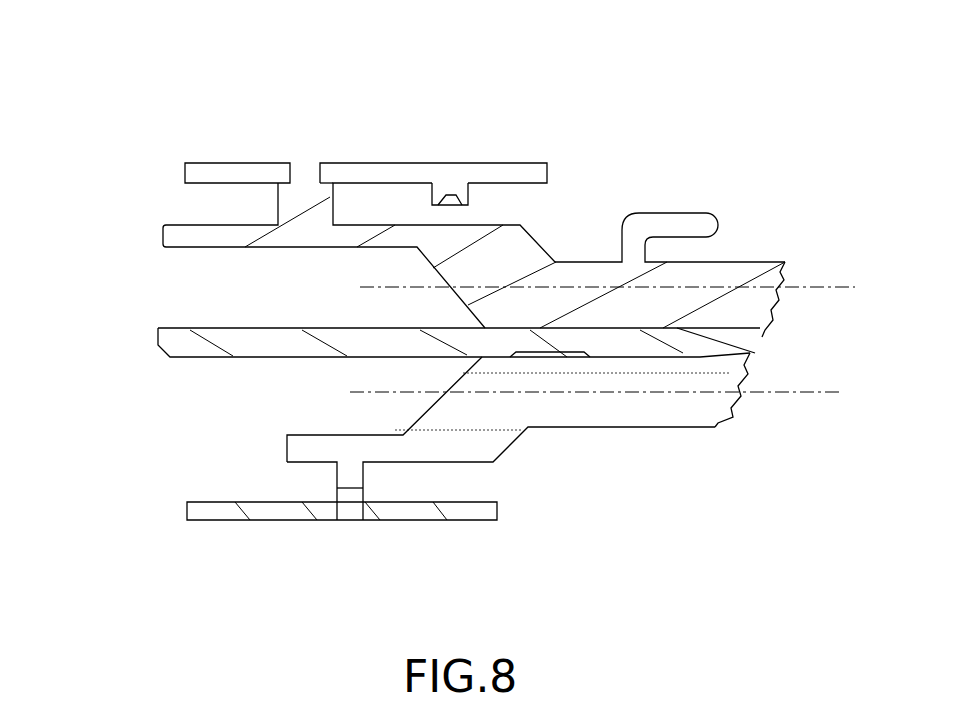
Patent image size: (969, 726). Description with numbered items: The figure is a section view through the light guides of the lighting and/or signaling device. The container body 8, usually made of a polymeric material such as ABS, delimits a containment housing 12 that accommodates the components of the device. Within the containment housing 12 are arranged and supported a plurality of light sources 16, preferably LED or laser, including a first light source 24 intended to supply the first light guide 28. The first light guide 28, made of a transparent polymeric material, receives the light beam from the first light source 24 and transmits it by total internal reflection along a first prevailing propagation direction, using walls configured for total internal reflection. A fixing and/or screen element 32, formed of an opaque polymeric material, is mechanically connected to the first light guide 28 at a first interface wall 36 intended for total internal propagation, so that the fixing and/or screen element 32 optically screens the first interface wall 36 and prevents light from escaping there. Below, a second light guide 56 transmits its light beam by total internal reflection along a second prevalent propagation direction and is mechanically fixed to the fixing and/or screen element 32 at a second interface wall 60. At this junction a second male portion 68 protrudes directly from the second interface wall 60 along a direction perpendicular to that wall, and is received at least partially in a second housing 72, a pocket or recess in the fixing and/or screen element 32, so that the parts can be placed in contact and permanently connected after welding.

The container body 8 is at (230, 175).
The containment housing 12 is at (472, 317).
The light sources 16 is at (503, 127).
The first light source 24 is at (445, 188).
The first light guide 28 is at (685, 215).
The first interface wall 36 is at (762, 335).
The fixing and/or screen element 32 is at (172, 357).
The second light guide 56 is at (688, 427).
The second interface wall 60 is at (750, 357).
The second male portion 68 is at (584, 486).
The second housing 72 is at (548, 362).